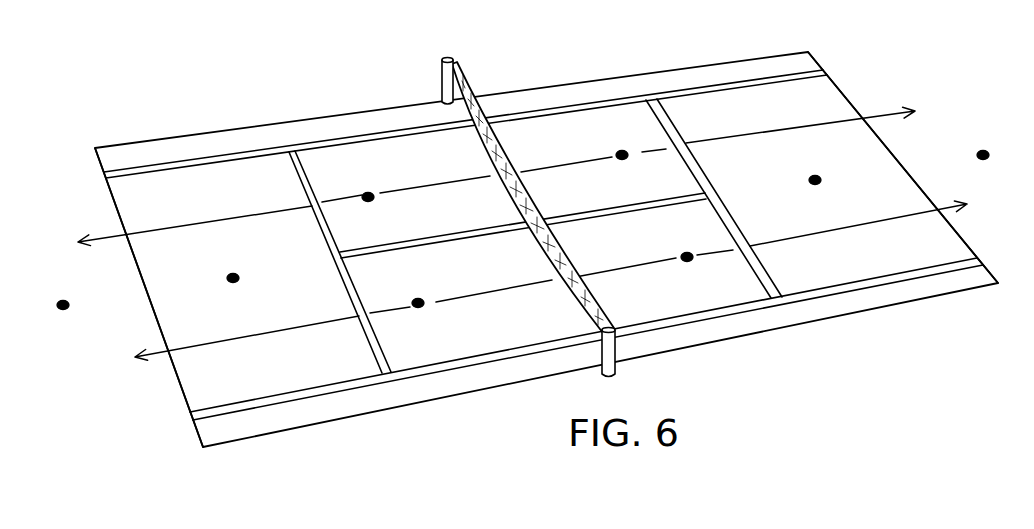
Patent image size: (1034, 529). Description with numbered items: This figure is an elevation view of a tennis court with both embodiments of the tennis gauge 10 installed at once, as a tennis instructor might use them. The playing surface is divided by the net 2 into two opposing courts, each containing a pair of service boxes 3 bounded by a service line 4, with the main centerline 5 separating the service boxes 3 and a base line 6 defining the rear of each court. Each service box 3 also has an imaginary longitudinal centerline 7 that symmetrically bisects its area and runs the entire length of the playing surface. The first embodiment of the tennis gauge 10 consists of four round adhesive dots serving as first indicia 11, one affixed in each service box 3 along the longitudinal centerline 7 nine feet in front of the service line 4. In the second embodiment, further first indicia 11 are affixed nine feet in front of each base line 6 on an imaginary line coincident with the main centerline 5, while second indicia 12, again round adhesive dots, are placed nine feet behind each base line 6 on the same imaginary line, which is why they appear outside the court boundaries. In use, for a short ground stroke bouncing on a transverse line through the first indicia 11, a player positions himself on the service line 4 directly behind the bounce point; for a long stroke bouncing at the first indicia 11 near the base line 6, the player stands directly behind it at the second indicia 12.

The tennis gauge 10 is at (286, 75).
The net 2 is at (461, 72).
The service box 3 is at (438, 222).
The service line 4 is at (333, 258).
The main centerline 5 is at (438, 243).
The base line 6 is at (150, 305).
The longitudinal centerline 7 is at (105, 238).
The first indicia 11 is at (236, 283).
The second indicia 12 is at (64, 310).